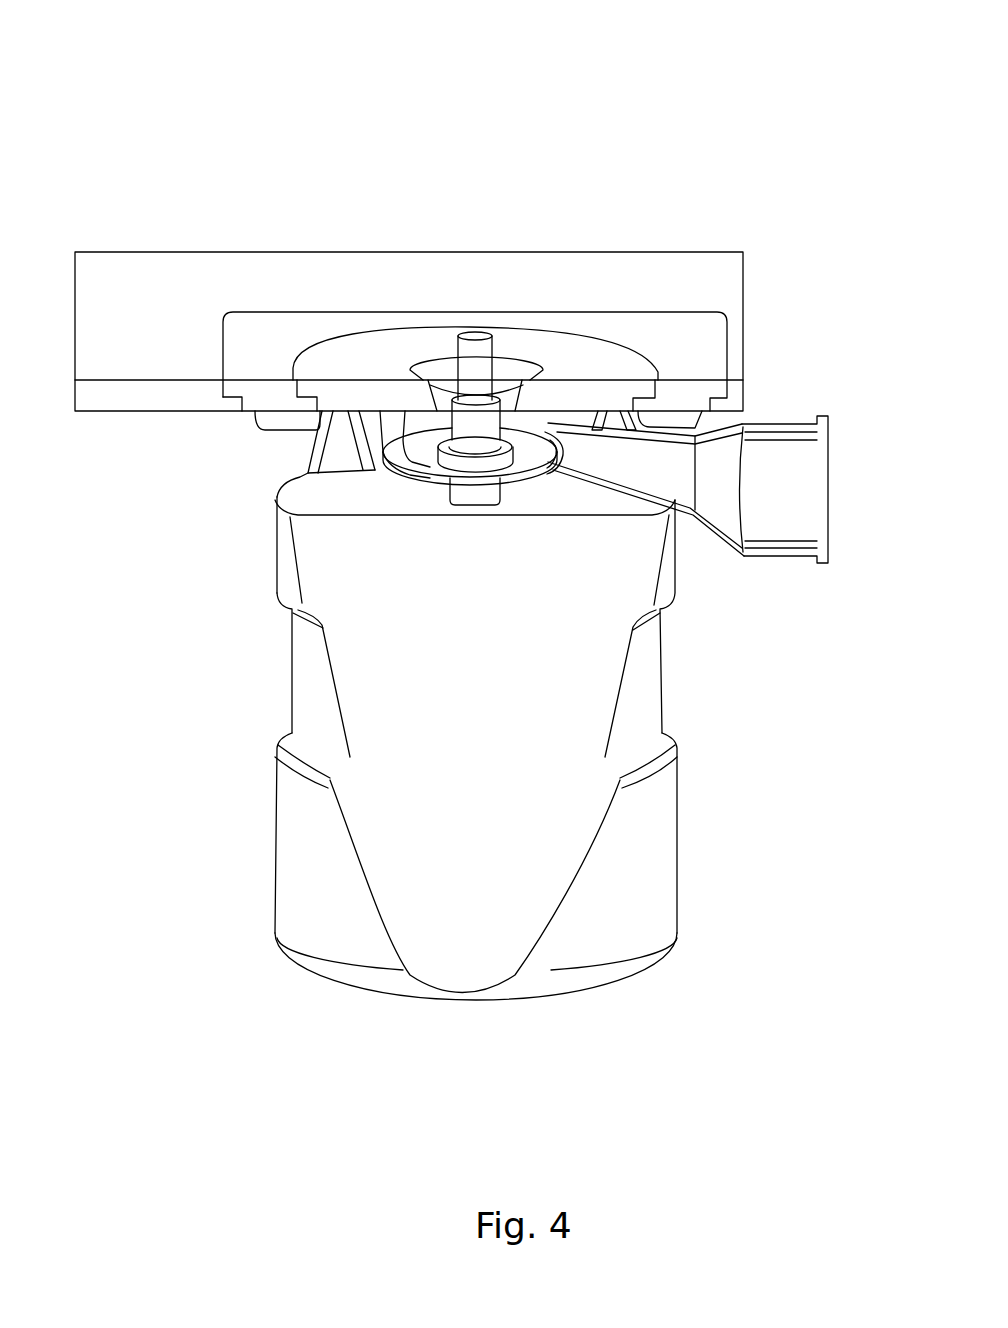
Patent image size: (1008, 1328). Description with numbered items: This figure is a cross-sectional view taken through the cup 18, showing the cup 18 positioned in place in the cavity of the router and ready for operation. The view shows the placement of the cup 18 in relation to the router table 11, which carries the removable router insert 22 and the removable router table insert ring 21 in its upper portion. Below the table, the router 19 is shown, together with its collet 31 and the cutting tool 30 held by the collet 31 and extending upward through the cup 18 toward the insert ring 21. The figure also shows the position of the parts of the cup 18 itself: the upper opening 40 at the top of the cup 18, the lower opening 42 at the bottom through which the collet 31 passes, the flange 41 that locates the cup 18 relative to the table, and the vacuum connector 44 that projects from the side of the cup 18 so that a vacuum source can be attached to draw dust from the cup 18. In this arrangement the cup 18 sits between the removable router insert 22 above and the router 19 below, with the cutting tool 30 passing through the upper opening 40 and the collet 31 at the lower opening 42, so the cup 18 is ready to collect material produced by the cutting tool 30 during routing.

The router table 11 is at (138, 397).
The cup 18 is at (437, 472).
The router 19 is at (628, 902).
The removable router table insert ring 21 is at (372, 362).
The removable router insert 22 is at (268, 347).
The cutting tool 30 is at (475, 358).
The collet 31 is at (475, 492).
The upper opening 40 is at (440, 412).
The flange 41 is at (388, 425).
The lower opening 42 is at (482, 450).
The vacuum connector 44 is at (708, 485).